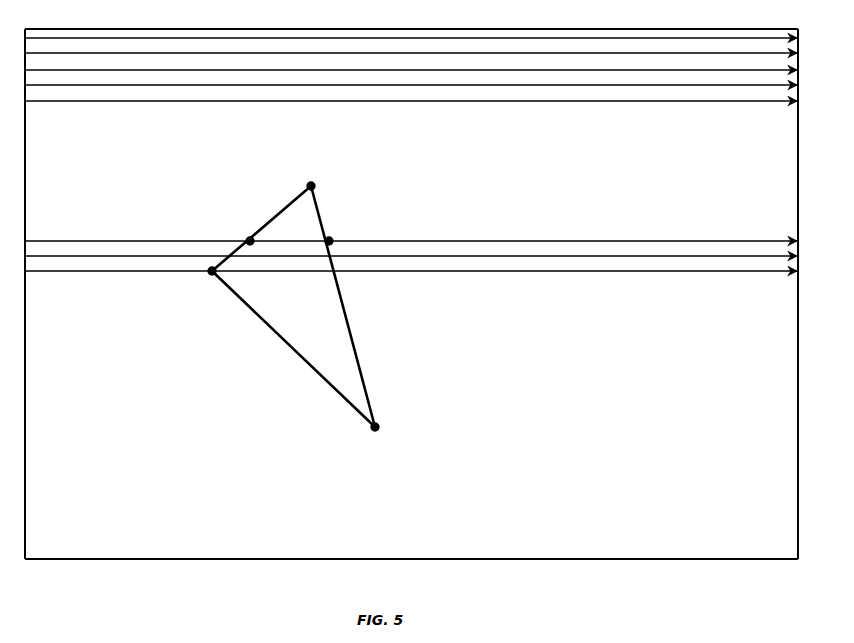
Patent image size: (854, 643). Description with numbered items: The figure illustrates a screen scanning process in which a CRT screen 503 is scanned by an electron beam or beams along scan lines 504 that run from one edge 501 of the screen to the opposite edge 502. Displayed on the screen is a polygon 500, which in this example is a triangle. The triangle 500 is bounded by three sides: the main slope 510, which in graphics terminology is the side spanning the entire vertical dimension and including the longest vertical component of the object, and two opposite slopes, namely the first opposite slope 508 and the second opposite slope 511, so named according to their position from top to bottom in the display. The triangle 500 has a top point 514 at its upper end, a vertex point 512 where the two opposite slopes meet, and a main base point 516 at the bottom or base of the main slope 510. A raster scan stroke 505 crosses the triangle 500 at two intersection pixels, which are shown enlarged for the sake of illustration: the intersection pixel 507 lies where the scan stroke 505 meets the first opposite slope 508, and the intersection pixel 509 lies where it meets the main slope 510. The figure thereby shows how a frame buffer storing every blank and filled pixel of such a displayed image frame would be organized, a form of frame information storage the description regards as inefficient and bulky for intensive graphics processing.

The polygon 500 is at (296, 300).
The edge 501 is at (25, 28).
The opposite edge 502 is at (797, 28).
The CRT screen 503 is at (78, 563).
The scan lines 504 is at (145, 70).
The raster scan stroke 505 is at (32, 240).
The intersection pixel 507 is at (248, 235).
The first opposite slope 508 is at (220, 252).
The intersection pixel 509 is at (331, 236).
The main slope 510 is at (343, 295).
The second opposite slope 511 is at (287, 348).
The vertex point 512 is at (211, 278).
The top point 514 is at (313, 180).
The main base point 516 is at (377, 432).